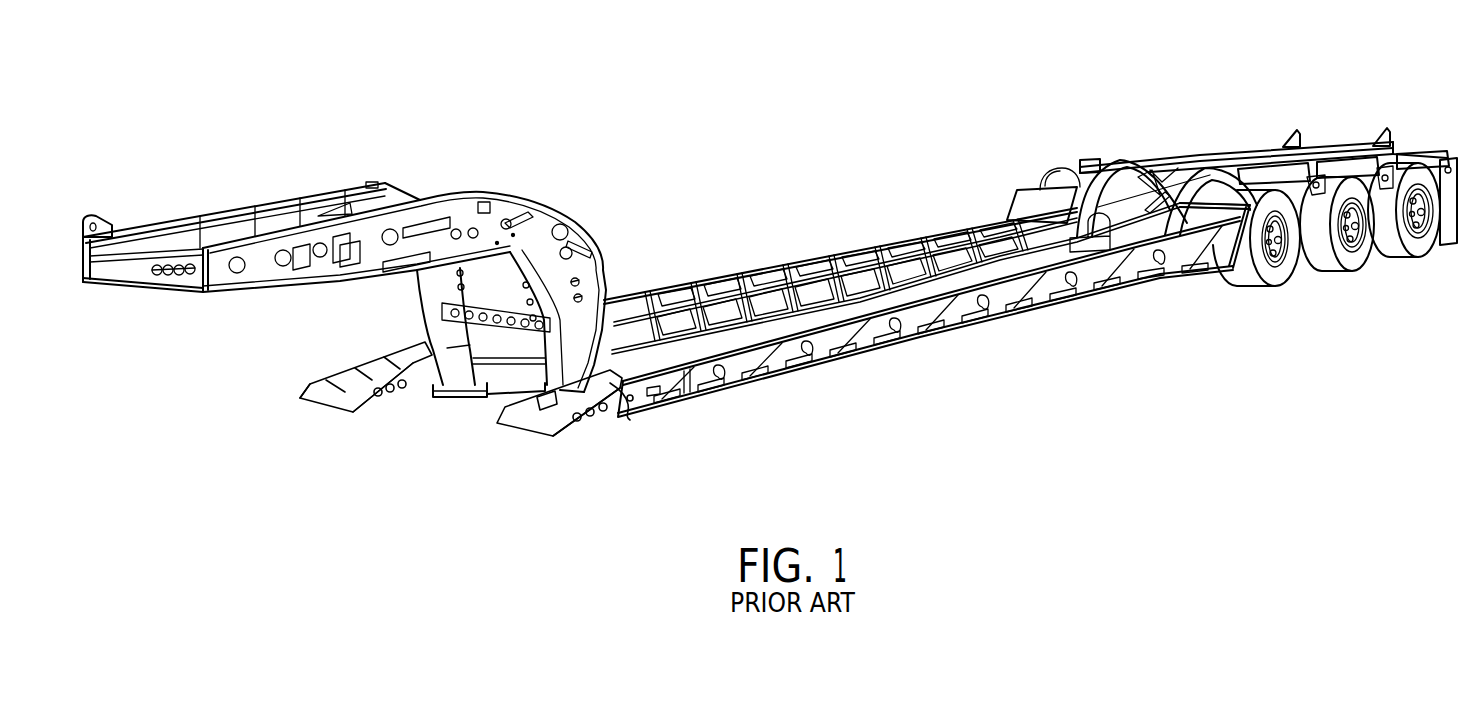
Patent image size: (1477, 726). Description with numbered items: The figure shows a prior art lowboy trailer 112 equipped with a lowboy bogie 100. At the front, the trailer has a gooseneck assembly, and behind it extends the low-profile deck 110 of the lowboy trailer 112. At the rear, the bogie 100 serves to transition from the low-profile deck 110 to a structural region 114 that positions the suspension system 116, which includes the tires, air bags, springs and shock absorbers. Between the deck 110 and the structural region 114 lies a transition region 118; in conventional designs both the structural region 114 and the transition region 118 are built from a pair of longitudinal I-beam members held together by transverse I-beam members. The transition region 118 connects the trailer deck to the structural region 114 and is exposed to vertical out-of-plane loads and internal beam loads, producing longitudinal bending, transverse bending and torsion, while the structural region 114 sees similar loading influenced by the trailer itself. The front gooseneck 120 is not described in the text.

The lowboy bogie 100 is at (1350, 117).
The low-profile deck 110 is at (834, 251).
The lowboy trailer 112 is at (943, 117).
The structural region 114 is at (1217, 148).
The suspension system 116 is at (1300, 293).
The transition region 118 is at (1100, 149).
The gooseneck 120 is at (277, 198).